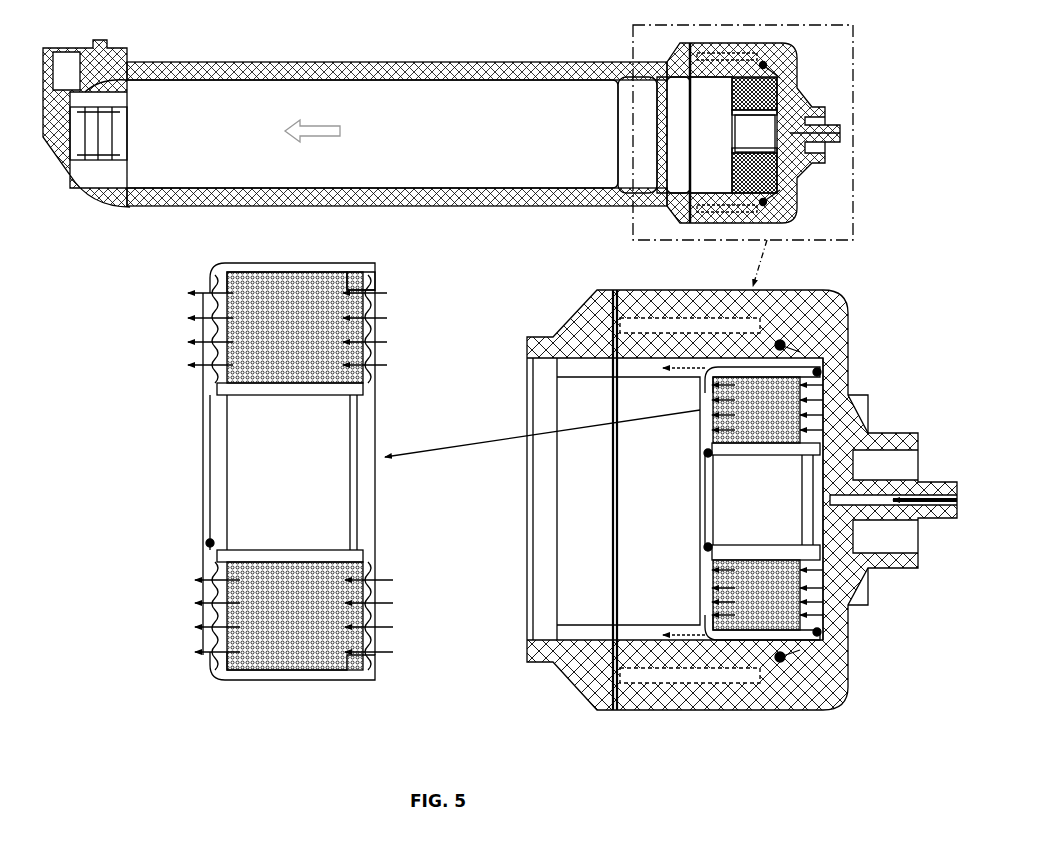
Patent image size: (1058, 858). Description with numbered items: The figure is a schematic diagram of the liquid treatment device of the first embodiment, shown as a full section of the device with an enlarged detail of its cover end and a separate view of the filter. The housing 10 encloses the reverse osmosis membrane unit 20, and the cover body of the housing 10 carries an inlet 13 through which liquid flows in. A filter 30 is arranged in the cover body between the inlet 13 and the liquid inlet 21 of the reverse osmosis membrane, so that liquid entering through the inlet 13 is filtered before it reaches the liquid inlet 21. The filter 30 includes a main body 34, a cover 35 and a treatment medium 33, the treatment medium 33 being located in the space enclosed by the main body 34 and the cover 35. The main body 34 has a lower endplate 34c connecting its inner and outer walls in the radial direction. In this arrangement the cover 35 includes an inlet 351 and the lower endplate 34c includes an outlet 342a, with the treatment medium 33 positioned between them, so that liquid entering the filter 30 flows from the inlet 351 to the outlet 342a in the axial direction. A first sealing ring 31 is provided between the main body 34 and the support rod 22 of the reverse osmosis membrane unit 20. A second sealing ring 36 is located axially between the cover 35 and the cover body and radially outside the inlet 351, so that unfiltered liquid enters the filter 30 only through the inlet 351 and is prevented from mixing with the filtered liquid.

The housing 10 is at (326, 60).
The reverse osmosis membrane unit 20 is at (440, 105).
The inlet 13 is at (930, 480).
The filter 30 is at (267, 468).
The first sealing ring 31 is at (207, 401).
The treatment medium 33 is at (295, 655).
The main body 34 is at (275, 263).
The lower endplate 34c is at (205, 328).
The outlet 342a is at (207, 318).
The cover 35 is at (378, 268).
The inlet 351 is at (357, 293).
The second sealing ring 36 is at (381, 669).
The liquid inlet 21 is at (702, 555).
The support rod 22 is at (768, 508).